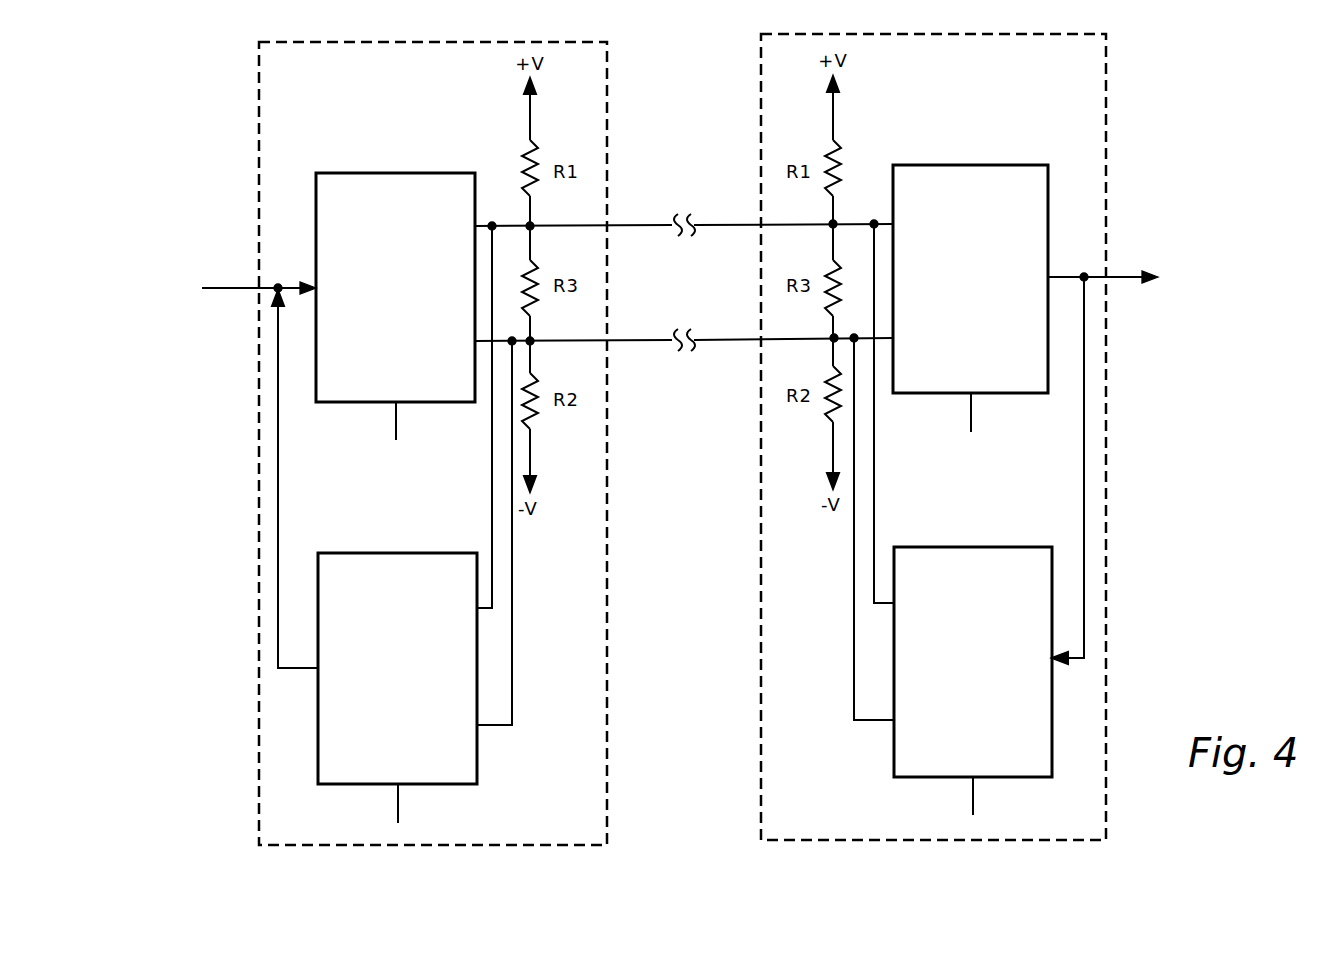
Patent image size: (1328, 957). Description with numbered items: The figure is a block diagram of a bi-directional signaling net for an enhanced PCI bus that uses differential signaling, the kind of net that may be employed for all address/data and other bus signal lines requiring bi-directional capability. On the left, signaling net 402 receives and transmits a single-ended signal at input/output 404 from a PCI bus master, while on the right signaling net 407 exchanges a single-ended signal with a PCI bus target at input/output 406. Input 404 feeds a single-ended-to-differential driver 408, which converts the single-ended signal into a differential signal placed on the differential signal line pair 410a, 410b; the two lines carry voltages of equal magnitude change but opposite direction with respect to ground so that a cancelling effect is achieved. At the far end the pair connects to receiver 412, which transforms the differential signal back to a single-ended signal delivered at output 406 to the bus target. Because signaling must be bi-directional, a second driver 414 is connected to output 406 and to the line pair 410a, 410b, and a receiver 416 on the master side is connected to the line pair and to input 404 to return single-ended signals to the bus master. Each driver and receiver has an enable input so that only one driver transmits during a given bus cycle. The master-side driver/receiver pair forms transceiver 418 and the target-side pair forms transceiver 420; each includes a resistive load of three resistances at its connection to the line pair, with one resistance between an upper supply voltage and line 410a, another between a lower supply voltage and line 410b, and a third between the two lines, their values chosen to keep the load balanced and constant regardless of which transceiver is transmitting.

The signaling net 402 is at (223, 288).
The input/output 404 is at (315, 285).
The input/output 406 is at (1051, 275).
The signaling net 407 is at (1103, 279).
The single-ended-to-differential driver 408 is at (353, 173).
The differential signal line 410a is at (636, 225).
The differential signal line 410b is at (636, 340).
The receiver 412 is at (1005, 165).
The second driver 414 is at (1009, 547).
The receiver 416 is at (358, 553).
The transceiver 418 is at (607, 80).
The transceiver 420 is at (761, 110).